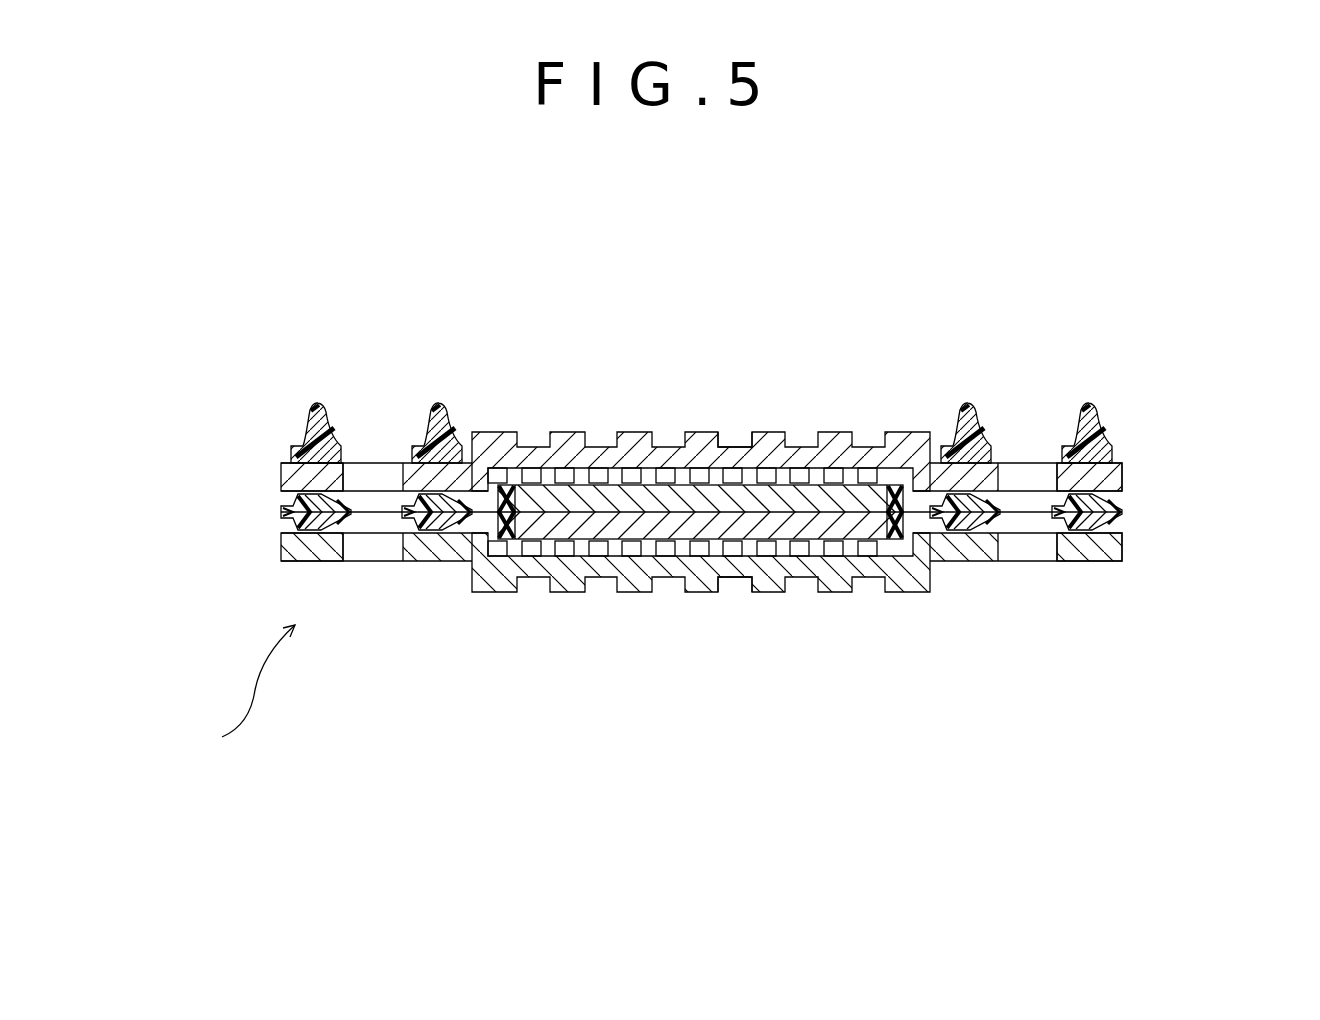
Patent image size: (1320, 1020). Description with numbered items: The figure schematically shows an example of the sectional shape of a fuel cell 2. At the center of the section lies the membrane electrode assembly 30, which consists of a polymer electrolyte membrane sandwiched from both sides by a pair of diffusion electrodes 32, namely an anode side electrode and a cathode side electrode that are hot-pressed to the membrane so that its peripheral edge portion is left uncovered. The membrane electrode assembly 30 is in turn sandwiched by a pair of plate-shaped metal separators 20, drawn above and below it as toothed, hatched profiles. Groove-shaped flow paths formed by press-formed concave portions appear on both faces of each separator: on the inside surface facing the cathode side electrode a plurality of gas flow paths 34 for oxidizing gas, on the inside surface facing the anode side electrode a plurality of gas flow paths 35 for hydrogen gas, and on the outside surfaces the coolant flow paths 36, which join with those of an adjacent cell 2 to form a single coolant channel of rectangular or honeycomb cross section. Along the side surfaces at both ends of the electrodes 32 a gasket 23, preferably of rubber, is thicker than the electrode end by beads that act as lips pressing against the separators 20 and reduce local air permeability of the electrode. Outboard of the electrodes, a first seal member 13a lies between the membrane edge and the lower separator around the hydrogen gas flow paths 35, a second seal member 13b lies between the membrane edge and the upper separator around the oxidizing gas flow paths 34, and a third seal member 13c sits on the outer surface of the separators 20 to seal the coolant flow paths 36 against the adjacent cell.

The cell 2 is at (248, 691).
The first seal member 13a is at (292, 522).
The second seal member 13b is at (292, 503).
The third seal member 13c is at (318, 405).
The separator 20 is at (832, 447).
The gasket 23 is at (496, 488).
The membrane electrode assembly 30 is at (517, 578).
The electrode 32 is at (669, 492).
The gas flow path for oxidizing gas 34 is at (627, 482).
The gas flow path for hydrogen gas 35 is at (626, 547).
The coolant flow path 36 is at (738, 447).